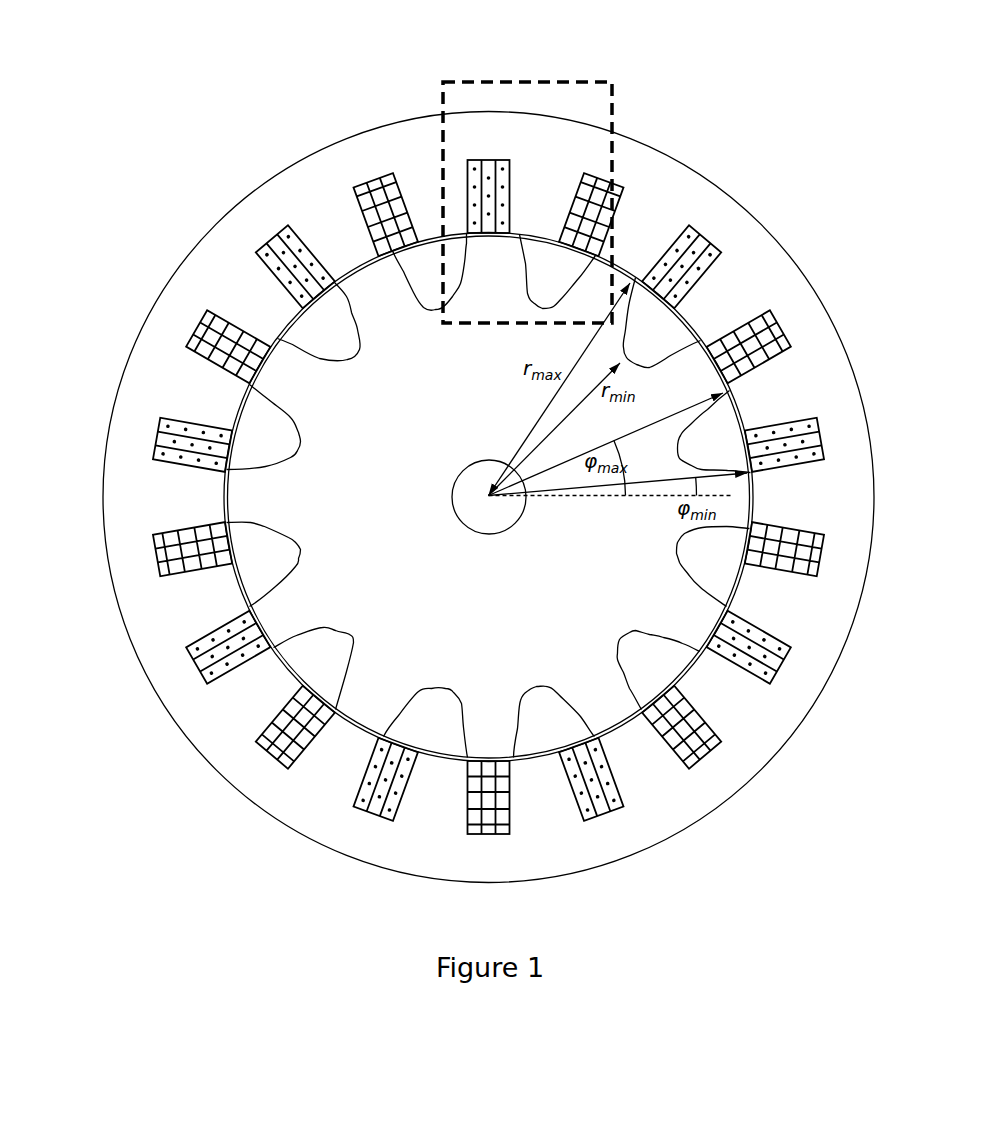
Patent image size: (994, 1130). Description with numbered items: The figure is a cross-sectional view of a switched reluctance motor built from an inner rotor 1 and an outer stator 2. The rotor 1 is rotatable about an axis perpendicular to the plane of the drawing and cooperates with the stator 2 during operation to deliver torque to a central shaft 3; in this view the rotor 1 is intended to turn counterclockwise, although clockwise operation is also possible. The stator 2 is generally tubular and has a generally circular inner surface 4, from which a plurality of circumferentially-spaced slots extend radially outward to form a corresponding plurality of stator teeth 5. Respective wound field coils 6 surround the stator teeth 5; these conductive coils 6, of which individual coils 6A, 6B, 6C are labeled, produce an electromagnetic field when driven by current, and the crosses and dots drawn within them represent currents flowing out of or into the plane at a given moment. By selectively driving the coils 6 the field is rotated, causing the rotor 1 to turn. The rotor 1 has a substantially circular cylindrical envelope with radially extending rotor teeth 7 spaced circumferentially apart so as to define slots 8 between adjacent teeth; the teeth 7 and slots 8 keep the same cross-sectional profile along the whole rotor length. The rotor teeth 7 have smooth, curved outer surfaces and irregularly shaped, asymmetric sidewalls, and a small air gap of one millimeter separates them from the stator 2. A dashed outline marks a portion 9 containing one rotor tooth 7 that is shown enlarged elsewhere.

The rotor 1 is at (390, 486).
The stator 2 is at (488, 475).
The shaft 3 is at (506, 511).
The inner surface 4 is at (295, 320).
The stator teeth 5 is at (777, 370).
The wound field coils 6 is at (545, 503).
The wound field coil 6A is at (488, 506).
The wound field coil 6B is at (495, 498).
The wound field coil 6C is at (810, 532).
The rotor teeth 7 is at (270, 627).
The slots 8 is at (423, 722).
The portion 9 is at (610, 80).